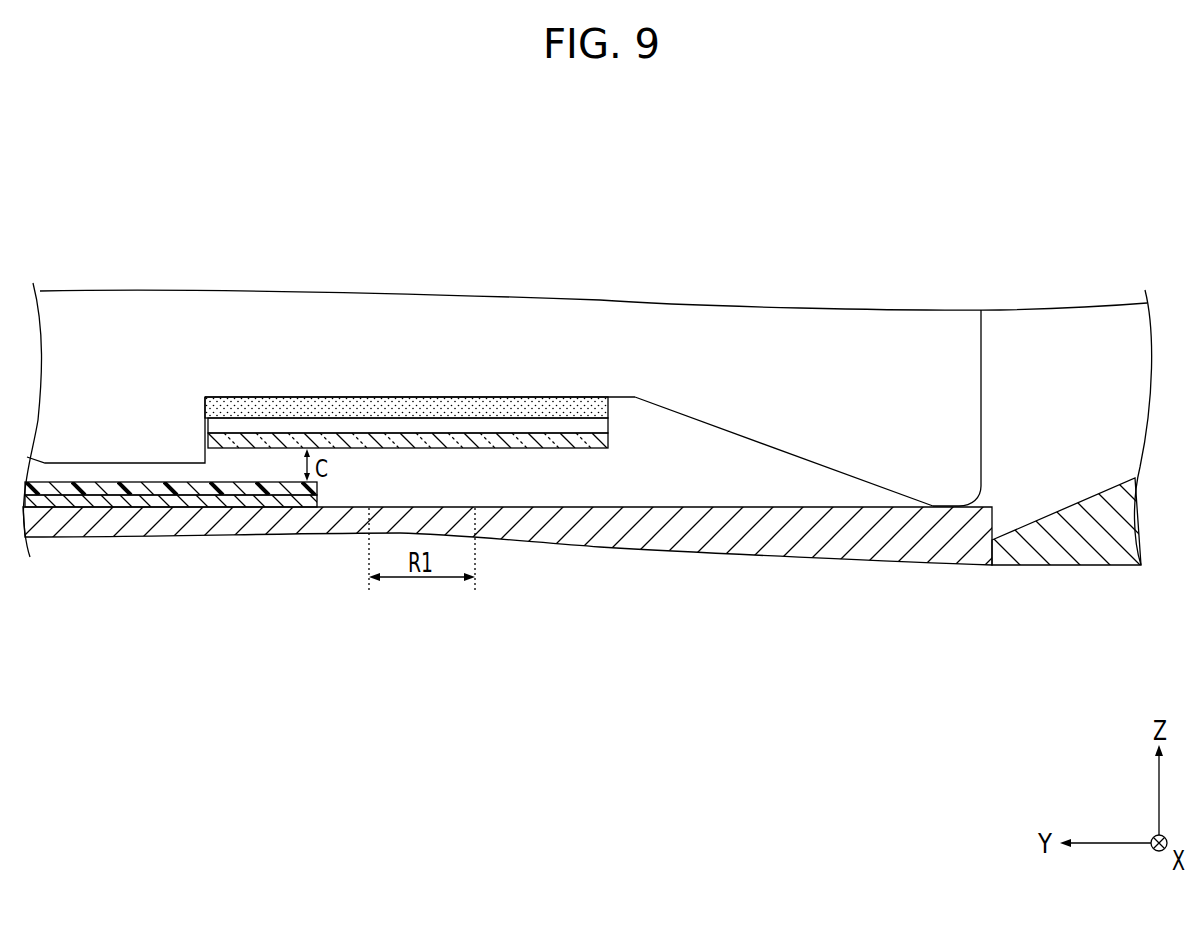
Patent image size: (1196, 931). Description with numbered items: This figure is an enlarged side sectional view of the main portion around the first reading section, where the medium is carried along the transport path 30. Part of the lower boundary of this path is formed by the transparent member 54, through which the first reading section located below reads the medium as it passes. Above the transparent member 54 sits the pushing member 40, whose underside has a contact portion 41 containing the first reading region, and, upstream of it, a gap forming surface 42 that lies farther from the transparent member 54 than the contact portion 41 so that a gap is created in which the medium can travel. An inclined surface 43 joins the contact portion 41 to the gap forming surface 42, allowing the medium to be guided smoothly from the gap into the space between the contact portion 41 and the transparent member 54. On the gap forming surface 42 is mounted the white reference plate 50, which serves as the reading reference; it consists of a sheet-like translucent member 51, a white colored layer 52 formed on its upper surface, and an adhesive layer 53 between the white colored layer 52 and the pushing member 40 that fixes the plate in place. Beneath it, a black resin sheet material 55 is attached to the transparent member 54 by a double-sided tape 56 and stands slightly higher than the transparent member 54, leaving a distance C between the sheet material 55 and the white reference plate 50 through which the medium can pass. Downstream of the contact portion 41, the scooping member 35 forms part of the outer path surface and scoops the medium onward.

The transport path 30 is at (1105, 357).
The scooping member 35 is at (1041, 513).
The pushing member 40 is at (153, 317).
The contact portion 41 is at (958, 480).
The gap forming surface 42 is at (488, 397).
The inclined surface 43 is at (745, 453).
The white reference plate 50 is at (406, 271).
The translucent member 51 is at (285, 438).
The white colored layer 52 is at (333, 425).
The adhesive layer 53 is at (378, 410).
The transparent member 54 is at (789, 507).
The sheet material 55 is at (255, 503).
The double-sided tape 56 is at (251, 479).